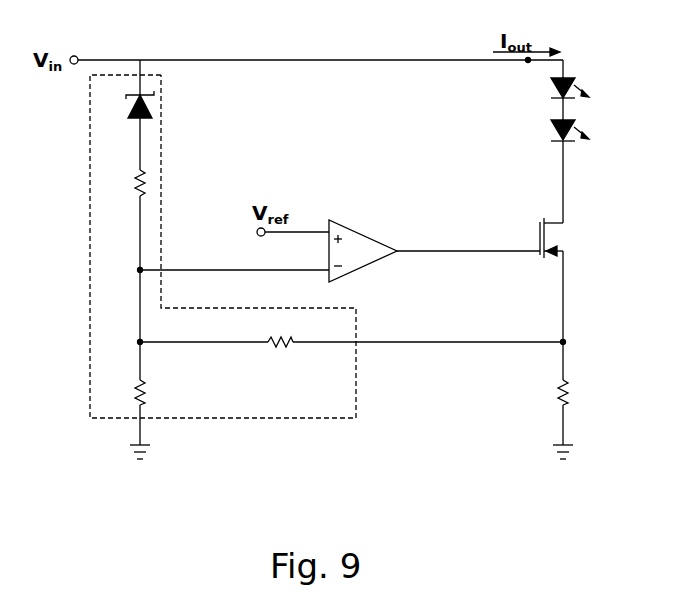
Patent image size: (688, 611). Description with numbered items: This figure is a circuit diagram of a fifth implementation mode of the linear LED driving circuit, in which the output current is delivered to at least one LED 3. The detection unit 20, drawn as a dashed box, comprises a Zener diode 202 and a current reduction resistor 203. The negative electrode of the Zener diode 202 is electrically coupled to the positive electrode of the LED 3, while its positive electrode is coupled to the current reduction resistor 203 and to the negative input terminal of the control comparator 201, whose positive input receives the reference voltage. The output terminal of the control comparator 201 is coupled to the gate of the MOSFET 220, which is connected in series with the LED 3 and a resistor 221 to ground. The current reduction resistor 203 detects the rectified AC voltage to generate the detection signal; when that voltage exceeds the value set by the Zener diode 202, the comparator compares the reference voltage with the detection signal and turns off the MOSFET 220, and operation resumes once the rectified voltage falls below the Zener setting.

The LED 3 is at (575, 77).
The detection unit 20 is at (90, 213).
The operational amplifier 201 is at (374, 240).
The Zener diode 202 is at (156, 102).
The current reduction resistor 203 is at (147, 388).
The MOSFET 220 is at (565, 250).
The resistor 221 is at (570, 388).